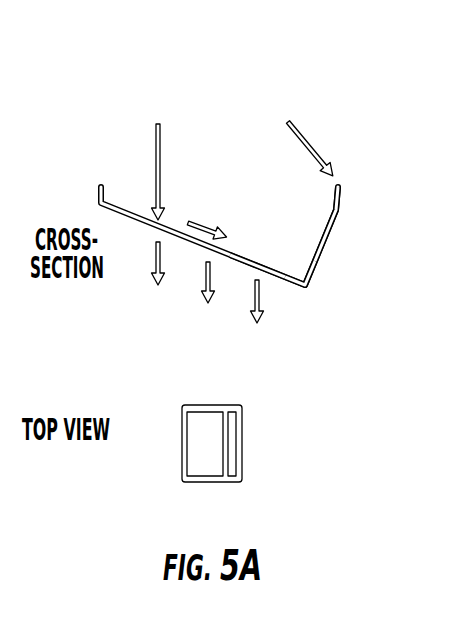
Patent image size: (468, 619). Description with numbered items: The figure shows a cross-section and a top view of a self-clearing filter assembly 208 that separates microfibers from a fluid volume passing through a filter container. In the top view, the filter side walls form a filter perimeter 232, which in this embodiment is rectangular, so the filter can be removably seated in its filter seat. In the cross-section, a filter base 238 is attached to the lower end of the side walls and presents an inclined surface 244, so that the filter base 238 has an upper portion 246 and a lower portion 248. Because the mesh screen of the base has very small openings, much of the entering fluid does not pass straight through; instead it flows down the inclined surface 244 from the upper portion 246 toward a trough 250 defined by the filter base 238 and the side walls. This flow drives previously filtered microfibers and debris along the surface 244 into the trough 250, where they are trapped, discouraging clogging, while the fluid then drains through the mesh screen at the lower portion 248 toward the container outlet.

The self-clearing filter assembly 208 is at (148, 76).
The filter perimeter 232 is at (182, 452).
The filter base 238 is at (301, 289).
The surface 244 is at (173, 227).
The upper portion 246 is at (140, 226).
The lower portion 248 is at (285, 281).
The trough 250 is at (298, 252).